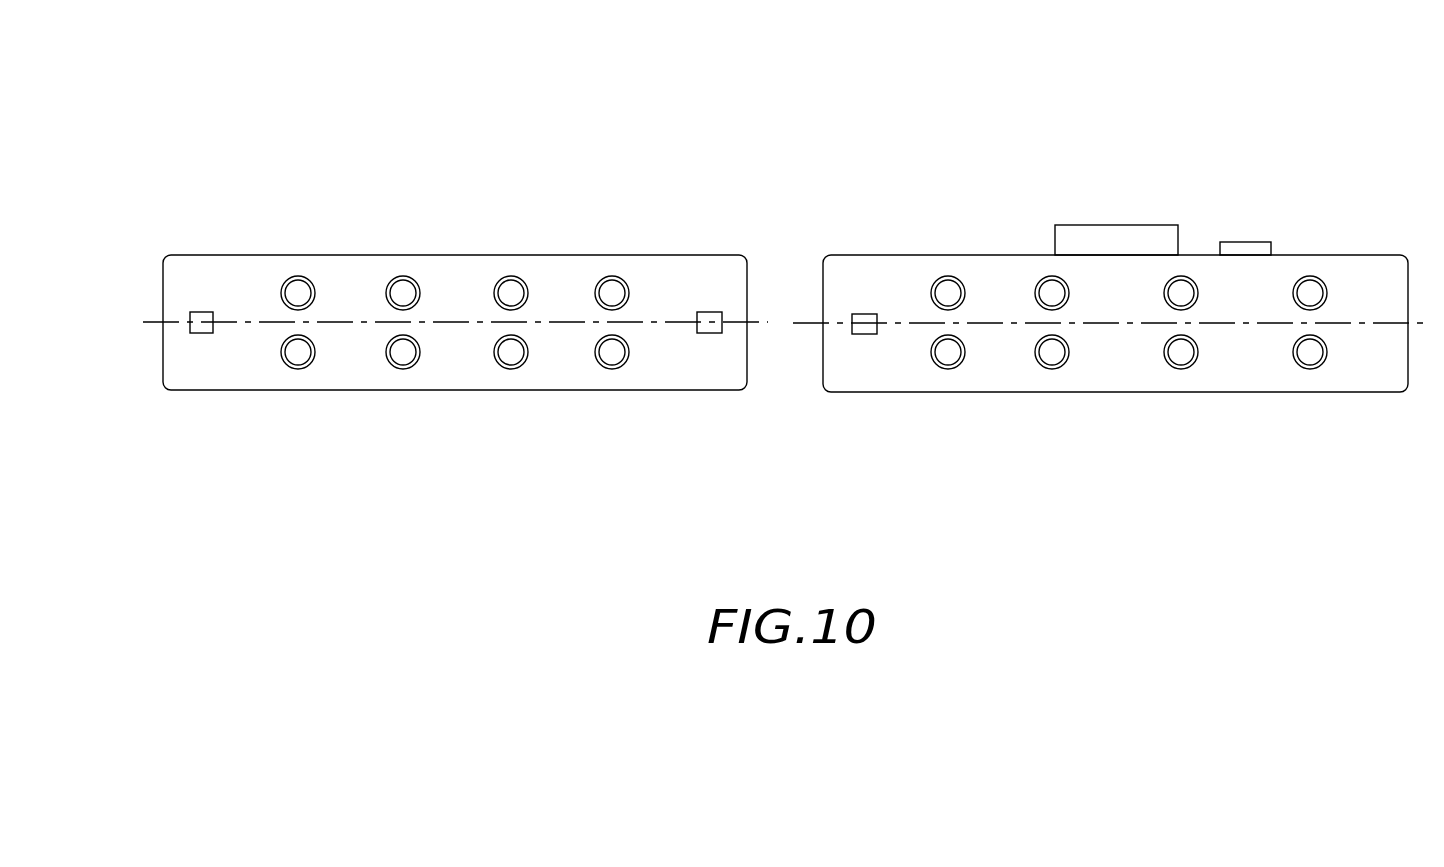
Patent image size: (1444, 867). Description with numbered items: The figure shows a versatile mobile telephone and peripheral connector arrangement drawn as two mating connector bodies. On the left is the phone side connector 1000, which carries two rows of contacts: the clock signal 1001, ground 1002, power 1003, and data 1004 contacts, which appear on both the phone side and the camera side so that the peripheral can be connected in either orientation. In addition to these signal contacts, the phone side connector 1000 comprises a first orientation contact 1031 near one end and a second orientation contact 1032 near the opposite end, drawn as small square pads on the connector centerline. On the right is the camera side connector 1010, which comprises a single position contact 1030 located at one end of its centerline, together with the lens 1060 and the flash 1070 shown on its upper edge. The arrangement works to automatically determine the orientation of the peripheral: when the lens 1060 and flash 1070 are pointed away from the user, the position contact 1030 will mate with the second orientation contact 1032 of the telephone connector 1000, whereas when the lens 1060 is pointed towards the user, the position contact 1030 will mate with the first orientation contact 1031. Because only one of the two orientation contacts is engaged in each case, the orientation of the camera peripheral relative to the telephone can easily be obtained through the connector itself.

The phone side connector 1000 is at (162, 290).
The camera side connector 1010 is at (1370, 375).
The clock signal contact 1001 is at (299, 293).
The ground contact 1002 is at (403, 293).
The power contact 1003 is at (511, 293).
The data contact 1004 is at (612, 293).
The position contact 1030 is at (852, 318).
The first orientation contact 1031 is at (202, 333).
The second orientation contact 1032 is at (710, 333).
The lens 1060 is at (1103, 242).
The flash 1070 is at (1245, 242).